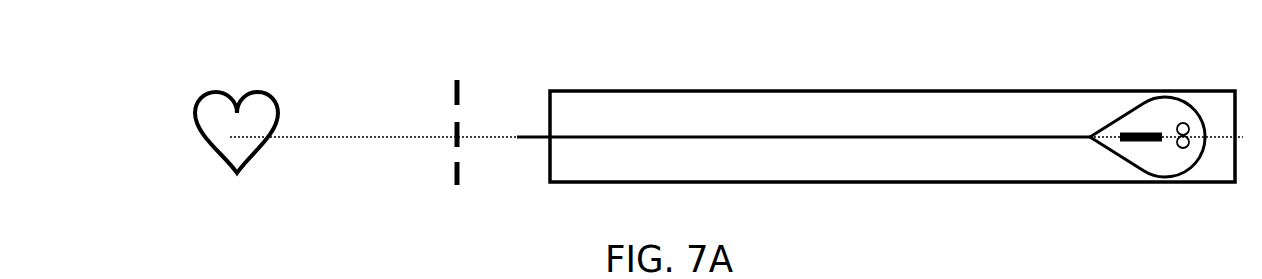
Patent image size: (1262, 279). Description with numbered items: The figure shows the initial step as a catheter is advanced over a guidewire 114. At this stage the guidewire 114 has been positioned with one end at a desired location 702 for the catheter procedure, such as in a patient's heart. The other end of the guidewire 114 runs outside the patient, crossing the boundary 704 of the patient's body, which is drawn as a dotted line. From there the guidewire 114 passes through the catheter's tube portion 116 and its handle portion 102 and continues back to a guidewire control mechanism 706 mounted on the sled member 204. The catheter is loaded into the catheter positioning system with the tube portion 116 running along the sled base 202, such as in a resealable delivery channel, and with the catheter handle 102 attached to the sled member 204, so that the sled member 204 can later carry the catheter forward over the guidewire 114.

The desired location 702 is at (205, 96).
The guidewire 114 is at (356, 137).
The boundary of the patient's body 704 is at (455, 102).
The tube portion 116 is at (528, 136).
The sled base 202 is at (622, 91).
The sled member 204 is at (1142, 103).
The handle portion 102 is at (1145, 142).
The guidewire control mechanism 706 is at (1183, 148).